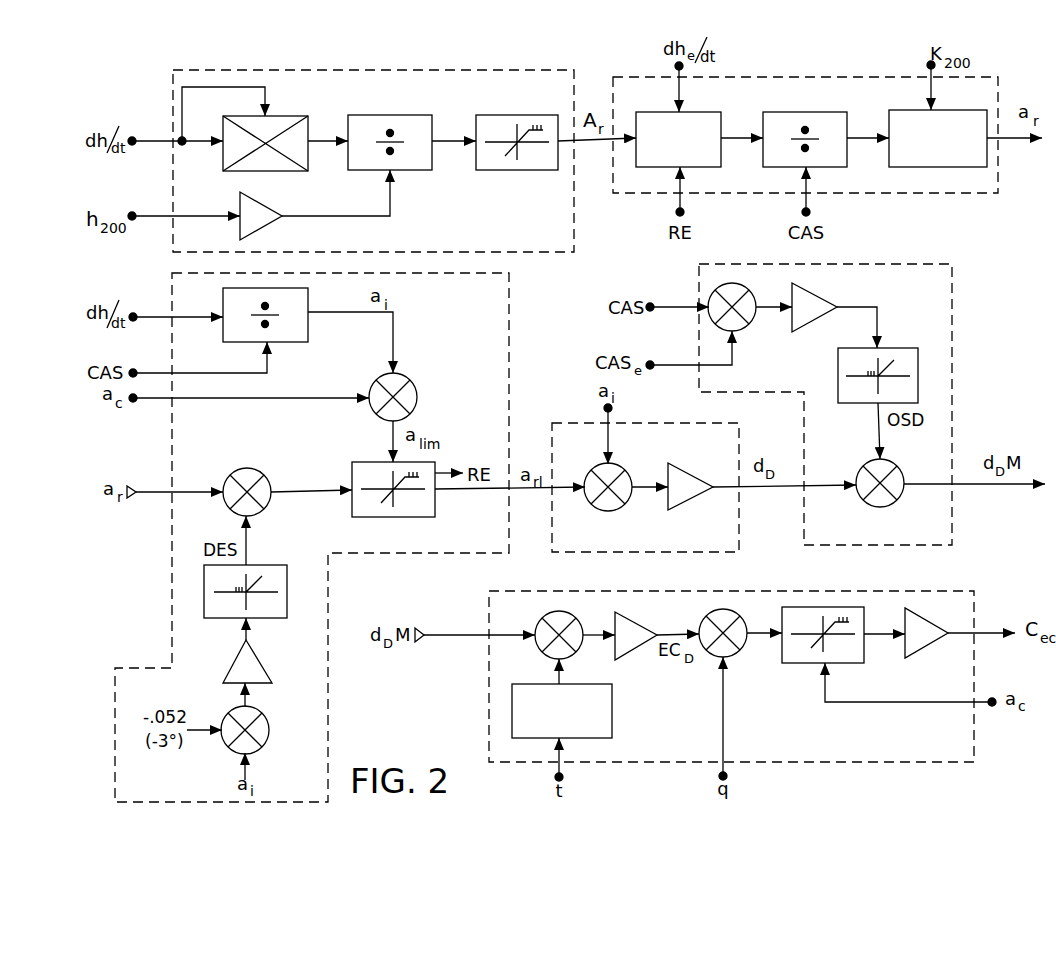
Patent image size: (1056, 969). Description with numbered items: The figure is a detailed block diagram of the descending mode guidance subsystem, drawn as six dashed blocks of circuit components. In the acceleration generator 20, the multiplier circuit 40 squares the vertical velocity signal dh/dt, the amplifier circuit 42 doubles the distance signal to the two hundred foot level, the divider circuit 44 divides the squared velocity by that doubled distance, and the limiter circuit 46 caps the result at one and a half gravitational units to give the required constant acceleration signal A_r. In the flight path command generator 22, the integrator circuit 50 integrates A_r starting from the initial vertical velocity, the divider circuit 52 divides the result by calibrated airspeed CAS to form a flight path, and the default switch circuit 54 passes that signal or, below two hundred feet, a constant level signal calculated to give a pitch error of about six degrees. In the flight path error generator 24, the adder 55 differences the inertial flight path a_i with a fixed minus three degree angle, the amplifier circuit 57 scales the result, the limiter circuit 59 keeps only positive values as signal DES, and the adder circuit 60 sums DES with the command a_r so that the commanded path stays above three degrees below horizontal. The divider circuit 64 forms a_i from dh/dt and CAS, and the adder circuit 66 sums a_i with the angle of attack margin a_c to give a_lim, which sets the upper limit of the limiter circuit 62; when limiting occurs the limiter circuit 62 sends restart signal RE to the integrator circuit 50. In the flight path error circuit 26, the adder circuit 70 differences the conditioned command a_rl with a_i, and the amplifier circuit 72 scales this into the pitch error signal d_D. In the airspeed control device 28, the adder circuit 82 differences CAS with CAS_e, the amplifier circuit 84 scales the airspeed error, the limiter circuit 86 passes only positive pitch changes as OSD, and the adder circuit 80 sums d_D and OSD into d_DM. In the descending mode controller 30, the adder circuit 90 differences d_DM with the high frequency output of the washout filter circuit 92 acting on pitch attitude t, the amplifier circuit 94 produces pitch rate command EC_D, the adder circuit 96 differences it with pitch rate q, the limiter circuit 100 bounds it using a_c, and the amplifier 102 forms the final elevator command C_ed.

The acceleration generator 20 is at (528, 252).
The flight path command generator 22 is at (912, 193).
The flight path error generator 24 is at (509, 312).
The flight path error circuit 26 is at (575, 423).
The airspeed control device 28 is at (895, 262).
The descending mode controller 30 is at (489, 716).
The multiplier circuit 40 is at (280, 116).
The amplifier circuit 42 is at (240, 200).
The divider circuit 44 is at (378, 115).
The limiter circuit 46 is at (505, 115).
The integrator circuit 50 is at (700, 112).
The divider circuit 52 is at (795, 112).
The default switch circuit 54 is at (950, 110).
The adder 55 is at (263, 713).
The amplifier circuit 57 is at (260, 660).
The limiter circuit 59 is at (273, 565).
The adder circuit 60 is at (255, 469).
The limiter circuit 62 is at (352, 472).
The divider circuit 64 is at (308, 295).
The adder circuit 66 is at (410, 378).
The adder circuit 70 is at (585, 472).
The amplifier circuit 72 is at (683, 463).
The adder circuit 80 is at (890, 504).
The adder circuit 82 is at (752, 322).
The amplifier circuit 84 is at (817, 322).
The limiter circuit 86 is at (858, 404).
The adder circuit 90 is at (548, 614).
The washout filter circuit 92 is at (612, 708).
The amplifier circuit 94 is at (640, 613).
The adder circuit 96 is at (743, 648).
The limiter circuit 100 is at (800, 663).
The amplifier 102 is at (930, 648).